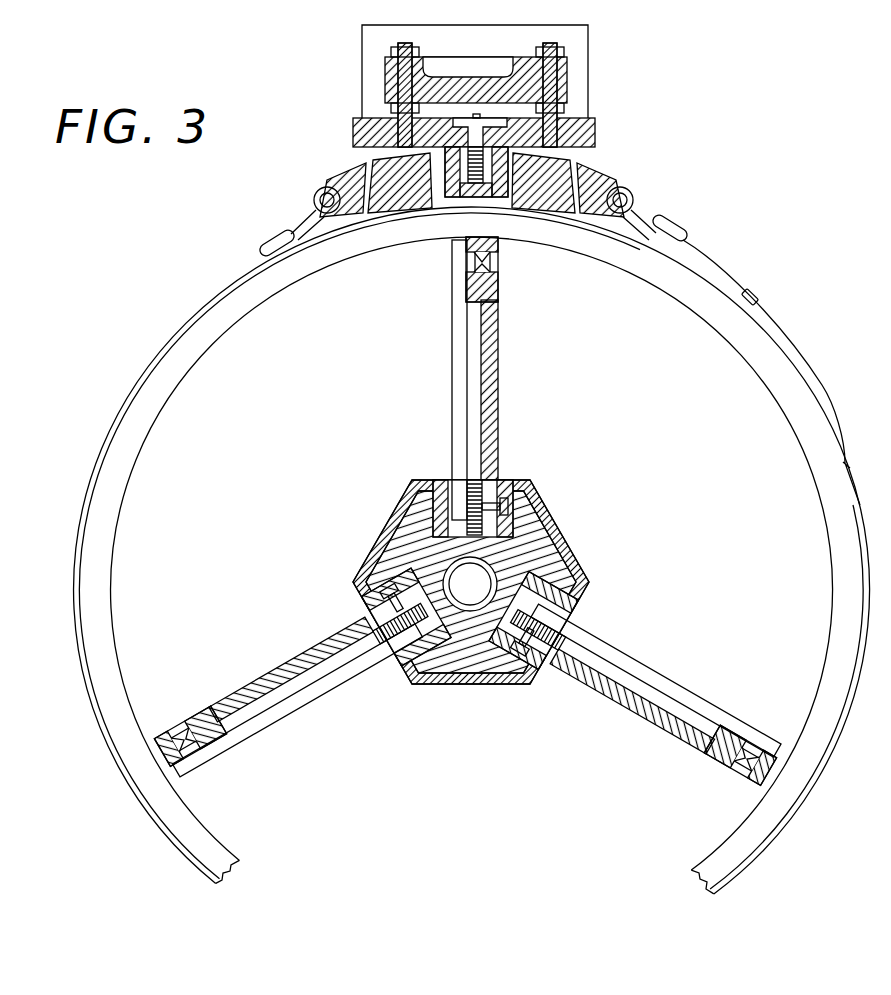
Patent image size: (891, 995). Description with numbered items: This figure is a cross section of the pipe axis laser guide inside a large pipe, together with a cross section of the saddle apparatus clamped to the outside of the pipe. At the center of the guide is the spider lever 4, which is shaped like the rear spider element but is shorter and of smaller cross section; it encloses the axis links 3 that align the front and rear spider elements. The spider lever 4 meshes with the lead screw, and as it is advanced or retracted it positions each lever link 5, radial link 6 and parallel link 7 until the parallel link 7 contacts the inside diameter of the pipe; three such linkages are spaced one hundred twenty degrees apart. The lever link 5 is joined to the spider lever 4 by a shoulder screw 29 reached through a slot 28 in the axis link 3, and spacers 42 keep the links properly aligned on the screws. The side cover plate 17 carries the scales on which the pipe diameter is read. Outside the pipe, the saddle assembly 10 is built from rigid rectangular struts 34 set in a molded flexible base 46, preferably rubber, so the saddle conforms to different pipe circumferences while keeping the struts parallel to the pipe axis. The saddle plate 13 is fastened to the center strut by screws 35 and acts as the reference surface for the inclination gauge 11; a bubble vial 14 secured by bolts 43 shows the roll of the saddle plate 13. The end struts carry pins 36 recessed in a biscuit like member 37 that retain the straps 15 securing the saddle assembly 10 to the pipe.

The axis links 3 is at (442, 480).
The spider lever 4 is at (393, 528).
The lever link 5 is at (500, 320).
The radial link 6 is at (453, 350).
The parallel link 7 is at (452, 295).
The saddle assembly 10 is at (325, 172).
The inclination gauge 11 is at (588, 27).
The saddle plate 13 is at (355, 130).
The bubble vial 14 is at (568, 75).
The straps 15 is at (163, 338).
The side cover plate 17 is at (407, 498).
The slot 28 is at (583, 562).
The shoulder screw 29 is at (545, 500).
The rectangular struts 34 is at (590, 142).
The screws 35 is at (430, 128).
The pins 36 is at (322, 197).
The biscuit like member 37 is at (320, 205).
The spacers 42 is at (473, 480).
The bolts 43 is at (398, 50).
The molded flexible base 46 is at (382, 205).